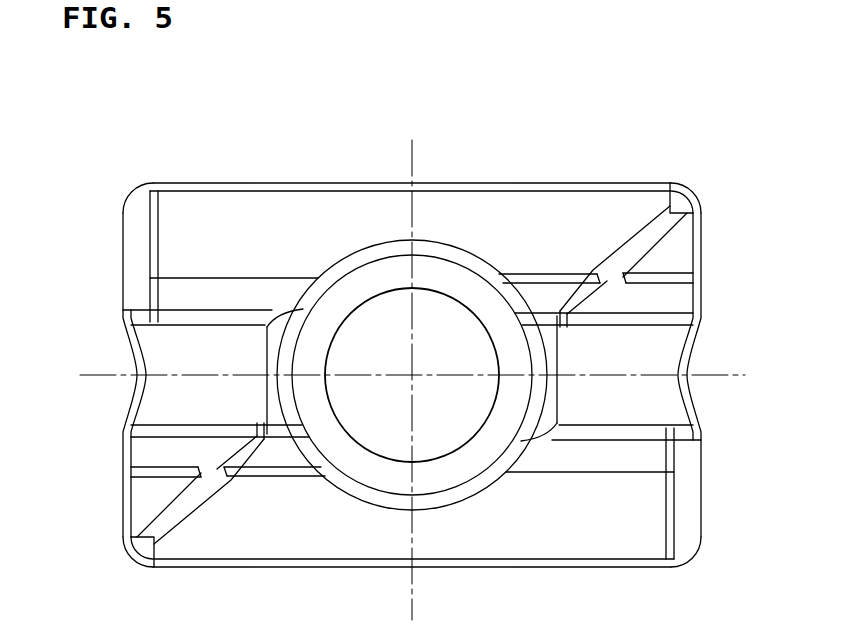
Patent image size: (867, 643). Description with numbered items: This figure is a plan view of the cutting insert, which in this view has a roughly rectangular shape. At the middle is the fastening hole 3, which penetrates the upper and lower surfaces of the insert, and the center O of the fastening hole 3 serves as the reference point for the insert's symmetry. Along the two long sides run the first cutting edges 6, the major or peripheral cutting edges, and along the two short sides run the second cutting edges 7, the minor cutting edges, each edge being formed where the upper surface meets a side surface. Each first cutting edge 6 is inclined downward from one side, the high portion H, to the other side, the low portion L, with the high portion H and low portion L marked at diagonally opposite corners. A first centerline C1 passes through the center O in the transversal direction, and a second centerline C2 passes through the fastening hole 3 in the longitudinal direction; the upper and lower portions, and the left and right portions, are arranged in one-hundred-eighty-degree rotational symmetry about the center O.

The fastening hole 3 is at (372, 338).
The first cutting edge 6 is at (517, 184).
The second cutting edge 7 is at (703, 238).
The high portion H is at (690, 192).
The low portion L is at (130, 190).
The first centerline C1 is at (428, 375).
The second centerline C2 is at (416, 367).
The center of the fastening hole O is at (412, 375).